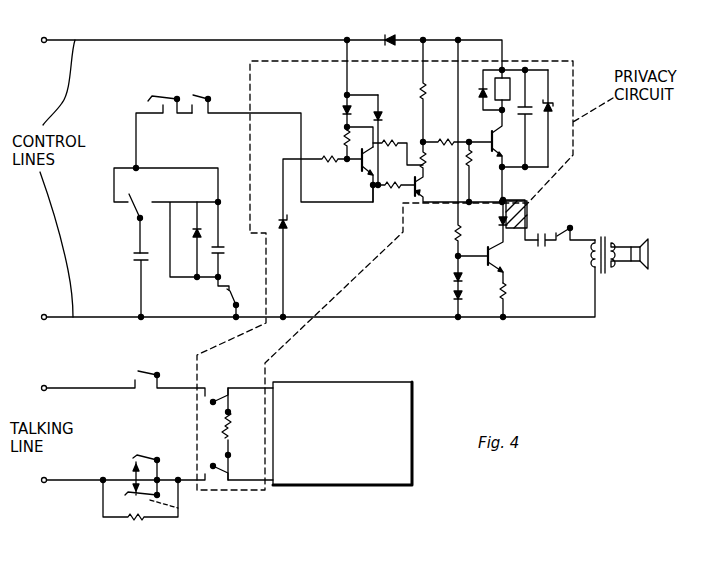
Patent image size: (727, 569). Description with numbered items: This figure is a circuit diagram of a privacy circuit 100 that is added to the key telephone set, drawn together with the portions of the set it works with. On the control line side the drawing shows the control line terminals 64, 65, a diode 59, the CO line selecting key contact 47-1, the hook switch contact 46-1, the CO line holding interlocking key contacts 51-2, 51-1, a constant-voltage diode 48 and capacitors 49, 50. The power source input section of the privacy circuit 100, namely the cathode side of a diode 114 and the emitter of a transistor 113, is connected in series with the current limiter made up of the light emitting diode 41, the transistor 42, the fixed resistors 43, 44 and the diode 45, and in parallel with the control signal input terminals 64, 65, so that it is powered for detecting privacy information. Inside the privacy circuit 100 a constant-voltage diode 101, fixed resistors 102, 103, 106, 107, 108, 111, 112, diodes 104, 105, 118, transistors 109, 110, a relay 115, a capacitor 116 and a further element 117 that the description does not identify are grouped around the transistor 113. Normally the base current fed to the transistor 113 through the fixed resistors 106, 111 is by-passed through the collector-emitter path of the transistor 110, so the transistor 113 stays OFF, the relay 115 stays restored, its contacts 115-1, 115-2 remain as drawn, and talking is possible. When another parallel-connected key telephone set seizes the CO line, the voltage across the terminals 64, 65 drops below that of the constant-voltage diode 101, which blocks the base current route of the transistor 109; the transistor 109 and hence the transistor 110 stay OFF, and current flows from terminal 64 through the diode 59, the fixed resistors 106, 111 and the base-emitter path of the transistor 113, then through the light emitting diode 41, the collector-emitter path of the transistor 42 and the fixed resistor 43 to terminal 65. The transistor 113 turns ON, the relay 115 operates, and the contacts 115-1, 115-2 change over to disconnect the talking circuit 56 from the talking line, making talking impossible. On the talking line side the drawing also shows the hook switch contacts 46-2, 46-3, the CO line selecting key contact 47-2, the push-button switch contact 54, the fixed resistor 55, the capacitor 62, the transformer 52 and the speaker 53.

The control line terminal 64 is at (46, 38).
The control line terminal 65 is at (308, 293).
The diode 59 is at (396, 36).
The privacy circuit 100 is at (530, 60).
The contact of CO line selecting key 47-1 is at (168, 92).
The contact of hook switch 46-1 is at (204, 92).
The contact of CO line holding interlocking key 51-2 is at (143, 198).
The constant-voltage diode 48 is at (195, 230).
The capacitor 49 is at (226, 252).
The capacitor 50 is at (130, 258).
The contact of CO line holding interlocking key 51-1 is at (226, 300).
The diode 104 is at (343, 105).
The fixed resistor 103 is at (343, 130).
The diode 105 is at (381, 116).
The fixed resistor 107 is at (390, 140).
The fixed resistor 102 is at (320, 155).
The transistor 109 is at (365, 172).
The fixed resistor 108 is at (388, 190).
The constant-voltage diode 101 is at (292, 226).
The fixed resistor 106 is at (427, 92).
The diode 118 is at (427, 164).
The transistor 110 is at (419, 186).
The fixed resistor 111 is at (445, 138).
The fixed resistor 112 is at (473, 164).
The transistor 113 is at (498, 138).
The diode 114 is at (480, 99).
The relay 115 is at (506, 66).
The capacitor 116 is at (520, 118).
The zener diode 117 is at (545, 117).
The fixed resistor 44 is at (463, 234).
The diode 45 is at (463, 300).
The transistor 42 is at (498, 262).
The fixed resistor 43 is at (510, 300).
The light emitting diode 41 is at (512, 230).
The capacitor 62 is at (543, 250).
The contact of hook switch 46-2 is at (572, 226).
The transformer 52 is at (604, 275).
The speaker 53 is at (648, 240).
The contact of hook switch 46-3 is at (147, 370).
The contact of relay 115 115-1 is at (220, 393).
The contact of relay 115 115-2 is at (236, 492).
The contact of CO line selecting key 47-2 is at (146, 455).
The contact of push-button switch 54 is at (181, 513).
The fixed resistor 55 is at (140, 525).
The talking circuit 56 is at (414, 431).